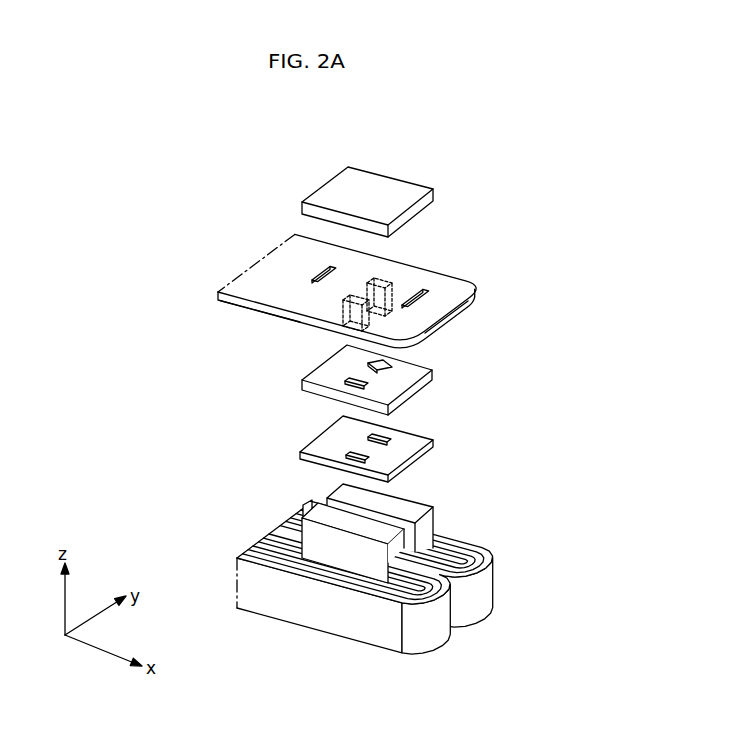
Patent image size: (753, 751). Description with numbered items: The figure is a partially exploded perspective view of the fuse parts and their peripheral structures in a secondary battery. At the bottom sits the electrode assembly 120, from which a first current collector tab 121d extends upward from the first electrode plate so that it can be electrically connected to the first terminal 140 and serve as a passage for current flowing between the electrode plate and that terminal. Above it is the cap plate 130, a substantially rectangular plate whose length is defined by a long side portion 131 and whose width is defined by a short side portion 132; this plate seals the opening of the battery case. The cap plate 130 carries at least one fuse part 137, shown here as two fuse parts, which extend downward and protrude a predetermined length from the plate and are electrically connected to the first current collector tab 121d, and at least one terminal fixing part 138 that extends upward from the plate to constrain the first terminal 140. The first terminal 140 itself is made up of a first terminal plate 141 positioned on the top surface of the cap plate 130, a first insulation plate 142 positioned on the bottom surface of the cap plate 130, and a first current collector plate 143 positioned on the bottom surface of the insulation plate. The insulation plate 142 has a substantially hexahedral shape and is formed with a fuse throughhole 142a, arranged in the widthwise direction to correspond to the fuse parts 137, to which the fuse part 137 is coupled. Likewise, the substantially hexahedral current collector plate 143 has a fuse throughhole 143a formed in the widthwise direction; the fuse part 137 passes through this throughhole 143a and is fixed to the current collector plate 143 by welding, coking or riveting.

The electrode assembly 120 is at (370, 586).
The first current collector tab 121d is at (415, 500).
The cap plate 130 is at (354, 282).
The long side portion 131 is at (245, 305).
The short side portion 132 is at (453, 322).
The fuse part 137 is at (383, 278).
The terminal fixing part 138 is at (427, 282).
The first terminal 140 is at (396, 174).
The first terminal plate 141 is at (370, 184).
The first insulation plate 142 is at (329, 375).
The fuse throughhole 142a is at (367, 363).
The first current collector plate 143 is at (404, 435).
The fuse throughhole 143a is at (387, 435).